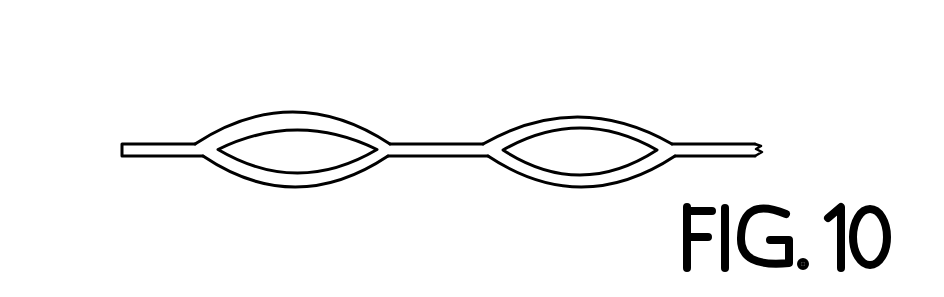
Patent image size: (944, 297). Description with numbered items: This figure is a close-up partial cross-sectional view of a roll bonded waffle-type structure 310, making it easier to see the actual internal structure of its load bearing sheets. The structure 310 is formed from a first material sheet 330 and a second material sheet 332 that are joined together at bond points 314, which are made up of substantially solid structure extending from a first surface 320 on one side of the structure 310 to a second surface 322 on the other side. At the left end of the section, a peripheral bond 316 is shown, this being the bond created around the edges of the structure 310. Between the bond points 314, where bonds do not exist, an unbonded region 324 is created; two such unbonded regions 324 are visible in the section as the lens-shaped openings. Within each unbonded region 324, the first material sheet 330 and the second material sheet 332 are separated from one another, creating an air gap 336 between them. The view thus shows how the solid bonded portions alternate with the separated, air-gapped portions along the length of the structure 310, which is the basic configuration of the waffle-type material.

The structure 310 is at (438, 142).
The bond points 314 is at (467, 107).
The peripheral bond 316 is at (125, 121).
The first surface 320 is at (767, 130).
The second surface 322 is at (795, 155).
The unbonded region 324 is at (447, 142).
The first material sheet 330 is at (594, 121).
The second material sheet 332 is at (295, 198).
The air gap 336 is at (297, 149).